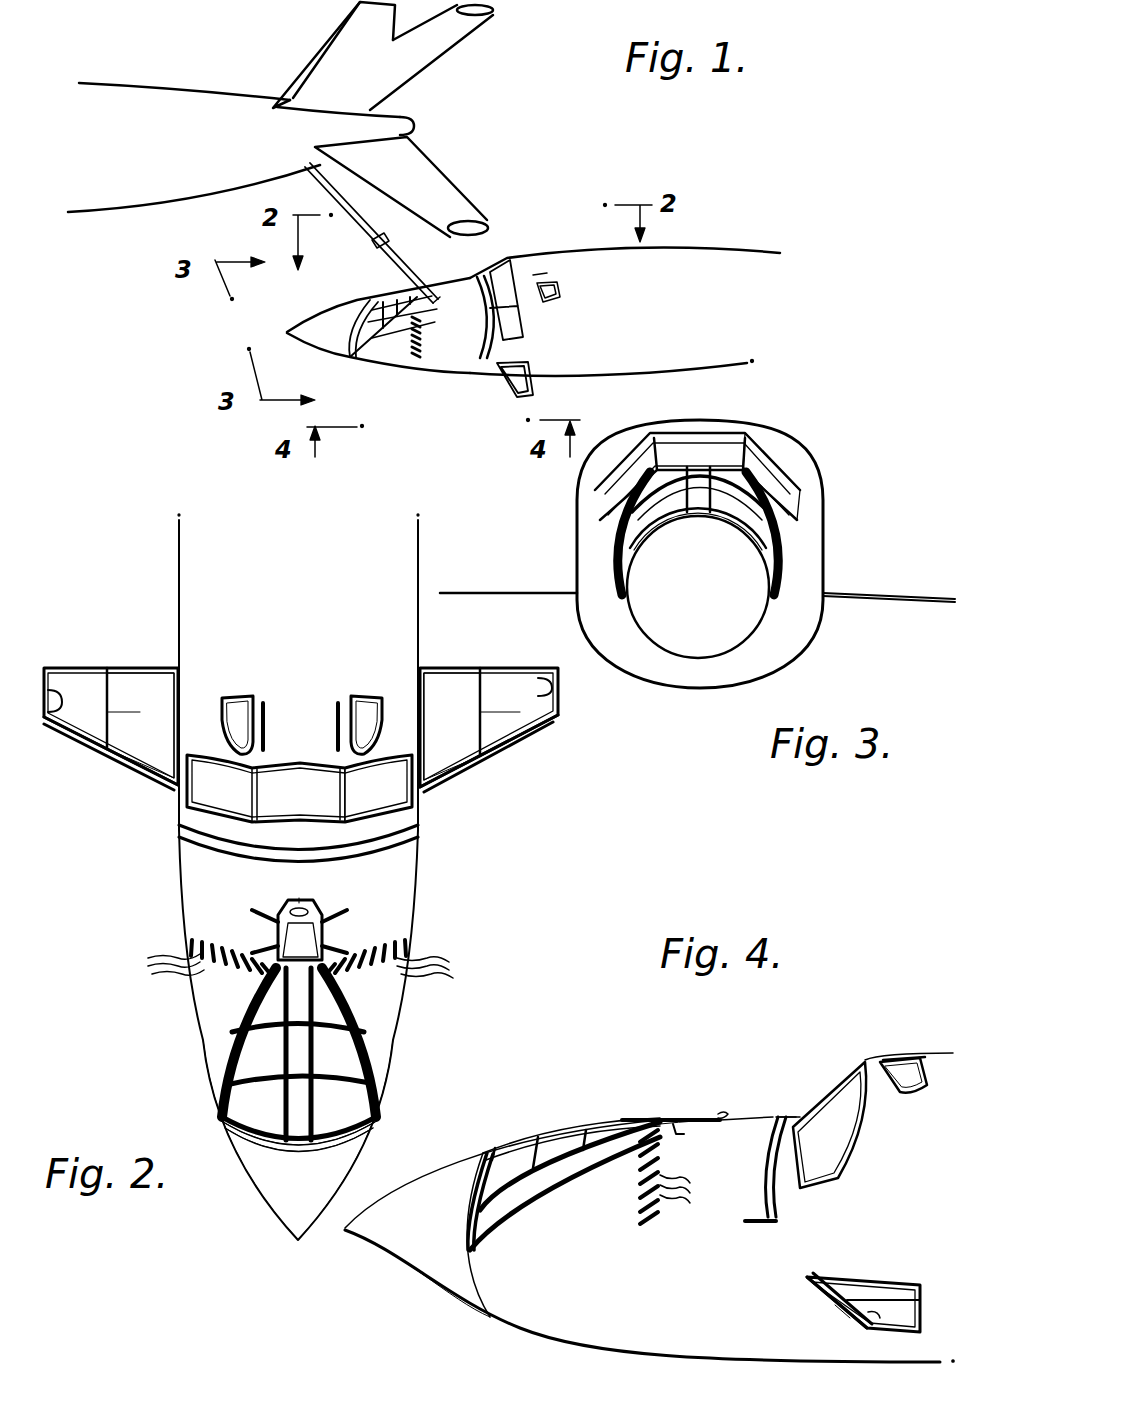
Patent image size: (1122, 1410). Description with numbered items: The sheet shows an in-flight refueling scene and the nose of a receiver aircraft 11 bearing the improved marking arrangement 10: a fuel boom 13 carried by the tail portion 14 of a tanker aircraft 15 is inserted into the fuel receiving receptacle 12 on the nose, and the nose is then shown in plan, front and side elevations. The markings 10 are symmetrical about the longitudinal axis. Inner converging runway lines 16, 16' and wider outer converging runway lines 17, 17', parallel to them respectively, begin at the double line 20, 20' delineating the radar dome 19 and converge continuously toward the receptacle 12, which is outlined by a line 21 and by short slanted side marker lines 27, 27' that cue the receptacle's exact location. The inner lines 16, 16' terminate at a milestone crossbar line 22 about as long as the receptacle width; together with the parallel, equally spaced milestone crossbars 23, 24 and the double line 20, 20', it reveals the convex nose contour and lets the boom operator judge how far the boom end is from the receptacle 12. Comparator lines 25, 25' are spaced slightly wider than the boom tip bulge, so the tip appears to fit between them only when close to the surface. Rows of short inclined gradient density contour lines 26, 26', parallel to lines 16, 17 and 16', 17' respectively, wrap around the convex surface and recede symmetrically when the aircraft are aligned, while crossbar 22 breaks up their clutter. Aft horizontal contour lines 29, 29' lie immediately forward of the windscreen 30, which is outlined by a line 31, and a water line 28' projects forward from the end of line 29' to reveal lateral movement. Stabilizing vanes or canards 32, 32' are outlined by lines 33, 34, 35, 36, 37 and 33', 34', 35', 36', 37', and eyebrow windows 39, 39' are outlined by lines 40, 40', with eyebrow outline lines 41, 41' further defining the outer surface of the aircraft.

In FIG. 1, the marking arrangement 10 is at (392, 344).
In FIG. 2, the marking arrangement 10 is at (380, 1030).
In FIG. 3, the marking arrangement 10 is at (792, 557).
In FIG. 4, the marking arrangement 10 is at (563, 1125).
In FIG. 1, the receiver aircraft 11 is at (457, 370).
In FIG. 2, the receiver aircraft 11 is at (178, 863).
In FIG. 3, the receiver aircraft 11 is at (800, 657).
In FIG. 4, the receiver aircraft 11 is at (570, 1342).
In FIG. 1, the fuel receiving receptacle 12 is at (436, 307).
In FIG. 2, the fuel receiving receptacle 12 is at (314, 897).
In FIG. 4, the fuel receiving receptacle 12 is at (703, 1118).
In FIG. 1, the fuel boom 13 is at (397, 268).
In FIG. 1, the tail portion 14 is at (425, 118).
In FIG. 1, the tanker aircraft 15 is at (158, 84).
In FIG. 2, the inner converging runway line 16 is at (260, 1054).
In FIG. 3, the inner converging runway line 16 is at (698, 553).
In FIG. 2, the inner converging runway line 16' is at (335, 1054).
In FIG. 3, the inner converging runway line 16' is at (698, 555).
In FIG. 4, the inner converging runway line 16' is at (565, 1196).
In FIG. 2, the outer converging runway line 17 is at (205, 1042).
In FIG. 3, the outer converging runway line 17 is at (616, 539).
In FIG. 2, the outer converging runway line 17' is at (391, 1042).
In FIG. 3, the outer converging runway line 17' is at (782, 549).
In FIG. 4, the outer converging runway line 17' is at (570, 1176).
In FIG. 2, the radar dome 19 is at (278, 1213).
In FIG. 3, the radar dome 19 is at (712, 646).
In FIG. 4, the radar dome 19 is at (420, 1282).
In FIG. 1, the double line 20 is at (363, 328).
In FIG. 2, the double line 20 is at (299, 1164).
In FIG. 4, the double line 20 is at (447, 1235).
In FIG. 2, the double line 20' is at (299, 1155).
In FIG. 4, the double line 20' is at (446, 1201).
In FIG. 2, the line 21 is at (289, 902).
In FIG. 4, the line 21 is at (726, 1116).
In FIG. 2, the milestone crossbar line 22 is at (325, 1002).
In FIG. 4, the milestone crossbar line 22 is at (668, 1118).
In FIG. 2, the milestone crossbar line 23 is at (222, 1055).
In FIG. 3, the milestone crossbar line 23 is at (680, 507).
In FIG. 4, the milestone crossbar line 23 is at (540, 1137).
In FIG. 2, the milestone crossbar line 24 is at (258, 1005).
In FIG. 4, the milestone crossbar line 24 is at (590, 1132).
In FIG. 2, the comparator line 25 is at (299, 1115).
In FIG. 3, the comparator line 25 is at (674, 515).
In FIG. 2, the comparator line 25' is at (299, 1120).
In FIG. 3, the comparator line 25' is at (720, 515).
In FIG. 4, the comparator line 25' is at (498, 1130).
In FIG. 2, the gradient density contour line 26 is at (191, 960).
In FIG. 2, the gradient density contour line 26' is at (412, 970).
In FIG. 4, the gradient density contour line 26' is at (685, 1177).
In FIG. 2, the side marker line 27 is at (244, 926).
In FIG. 2, the side marker line 27' is at (366, 930).
In FIG. 4, the side marker line 27' is at (707, 1146).
In FIG. 4, the water line 28' is at (740, 1235).
In FIG. 2, the aft horizontal contour line 29 is at (333, 846).
In FIG. 4, the aft horizontal contour line 29 is at (740, 1170).
In FIG. 2, the aft horizontal contour line 29' is at (337, 820).
In FIG. 4, the aft horizontal contour line 29' is at (816, 1166).
In FIG. 2, the windscreen 30 is at (302, 780).
In FIG. 3, the windscreen 30 is at (740, 442).
In FIG. 4, the windscreen 30 is at (824, 1106).
In FIG. 2, the line 31 is at (400, 772).
In FIG. 3, the line 31 is at (774, 450).
In FIG. 4, the line 31 is at (848, 1152).
In FIG. 2, the stabilizing vane 32 is at (106, 694).
In FIG. 3, the stabilizing vane 32 is at (508, 565).
In FIG. 2, the stabilizing vane 32' is at (525, 727).
In FIG. 3, the stabilizing vane 32' is at (889, 577).
In FIG. 4, the stabilizing vane 32' is at (863, 1330).
In FIG. 2, the line 33 is at (111, 756).
In FIG. 2, the line 33' is at (495, 753).
In FIG. 4, the line 33' is at (813, 1300).
In FIG. 2, the line 34 is at (101, 683).
In FIG. 2, the line 34' is at (465, 689).
In FIG. 4, the line 34' is at (904, 1270).
In FIG. 1, the line 35 is at (515, 379).
In FIG. 2, the line 35 is at (51, 728).
In FIG. 2, the line 35' is at (535, 664).
In FIG. 4, the line 35' is at (835, 1330).
In FIG. 2, the line 36 is at (140, 725).
In FIG. 2, the line 36' is at (452, 726).
In FIG. 4, the line 36' is at (883, 1268).
In FIG. 2, the line 37 is at (135, 720).
In FIG. 2, the line 37' is at (515, 717).
In FIG. 4, the line 37' is at (807, 1317).
In FIG. 1, the eyebrow window 39 is at (546, 287).
In FIG. 2, the eyebrow window 39 is at (209, 736).
In FIG. 2, the eyebrow window 39' is at (390, 711).
In FIG. 4, the eyebrow window 39' is at (915, 1052).
In FIG. 2, the line 40 is at (233, 702).
In FIG. 2, the line 40' is at (365, 691).
In FIG. 4, the line 40' is at (905, 1096).
In FIG. 2, the eyebrow outline line 41 is at (271, 706).
In FIG. 2, the eyebrow outline line 41' is at (323, 704).
In FIG. 4, the eyebrow outline line 41' is at (892, 1035).